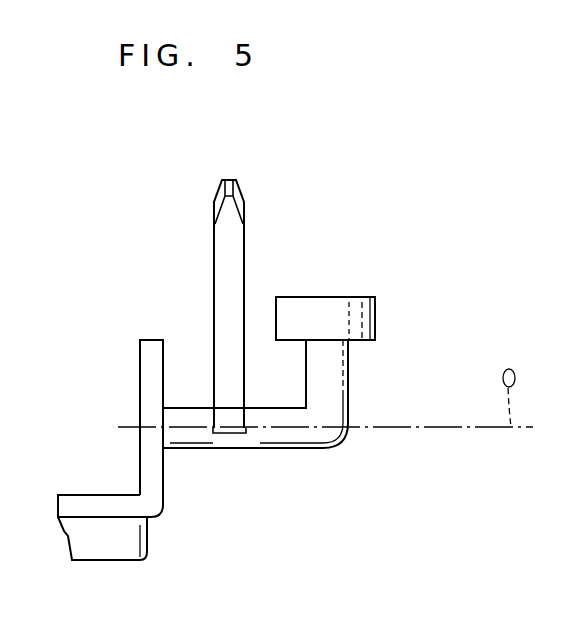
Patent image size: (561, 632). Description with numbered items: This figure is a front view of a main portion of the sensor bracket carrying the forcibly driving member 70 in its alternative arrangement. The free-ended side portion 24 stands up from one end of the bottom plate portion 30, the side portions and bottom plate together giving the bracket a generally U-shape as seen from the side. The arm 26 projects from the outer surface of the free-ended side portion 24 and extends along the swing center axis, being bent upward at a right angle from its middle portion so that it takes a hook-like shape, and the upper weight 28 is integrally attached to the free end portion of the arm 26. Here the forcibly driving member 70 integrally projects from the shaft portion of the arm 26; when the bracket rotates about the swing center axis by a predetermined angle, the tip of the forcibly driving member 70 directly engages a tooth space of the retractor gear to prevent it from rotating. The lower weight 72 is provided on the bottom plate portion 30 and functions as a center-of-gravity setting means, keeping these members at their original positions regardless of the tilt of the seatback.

The forcibly driving member 70 is at (238, 233).
The upper weight 28 is at (358, 322).
The arm 26 is at (330, 393).
The free-ended side portion 24 is at (147, 396).
The bottom plate portion 30 is at (105, 505).
The lower weight 72 is at (125, 533).